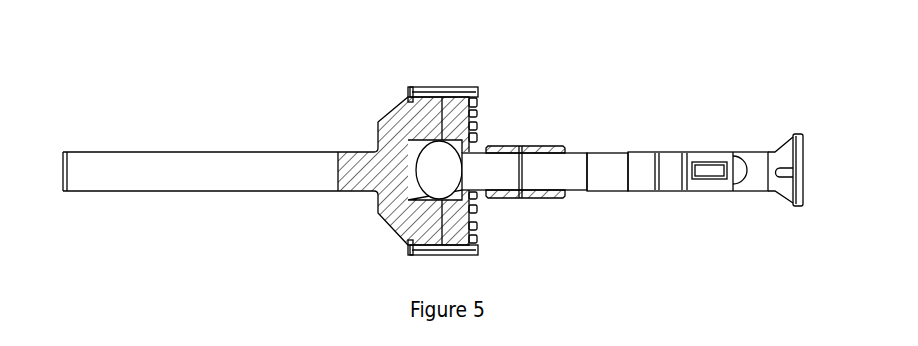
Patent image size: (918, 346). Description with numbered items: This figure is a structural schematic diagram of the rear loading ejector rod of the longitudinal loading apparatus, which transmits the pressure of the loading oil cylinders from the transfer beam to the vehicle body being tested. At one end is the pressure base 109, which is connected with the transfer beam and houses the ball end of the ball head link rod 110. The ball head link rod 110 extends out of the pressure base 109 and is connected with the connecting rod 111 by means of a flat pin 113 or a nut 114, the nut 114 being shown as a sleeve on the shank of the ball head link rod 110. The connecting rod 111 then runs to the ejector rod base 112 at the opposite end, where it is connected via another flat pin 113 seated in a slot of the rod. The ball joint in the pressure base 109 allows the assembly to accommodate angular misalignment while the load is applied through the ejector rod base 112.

The pressure base 109 is at (394, 113).
The ball head link rod 110 is at (472, 168).
The nut 114 is at (518, 146).
The connecting rod 111 is at (606, 170).
The flat pin 113 is at (713, 170).
The ejector rod base 112 is at (777, 168).